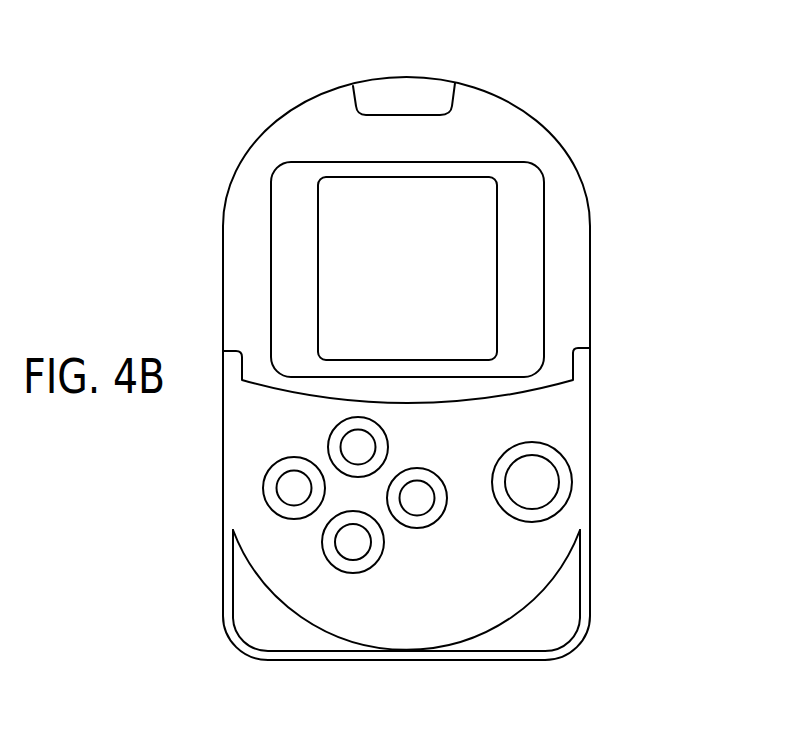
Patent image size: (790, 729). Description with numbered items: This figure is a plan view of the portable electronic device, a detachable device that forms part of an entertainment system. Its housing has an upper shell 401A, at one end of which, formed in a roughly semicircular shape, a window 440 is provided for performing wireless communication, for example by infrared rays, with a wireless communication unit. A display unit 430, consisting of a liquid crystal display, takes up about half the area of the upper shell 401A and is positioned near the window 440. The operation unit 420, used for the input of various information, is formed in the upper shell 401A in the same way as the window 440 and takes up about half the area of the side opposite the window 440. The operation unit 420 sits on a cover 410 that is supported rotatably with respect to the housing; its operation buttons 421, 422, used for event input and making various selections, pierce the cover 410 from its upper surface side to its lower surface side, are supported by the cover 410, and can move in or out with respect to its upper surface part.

The upper shell 401A is at (581, 259).
The cover 410 is at (582, 436).
The operation unit 420 is at (470, 613).
The operation button 421 is at (365, 445).
The operation button 422 is at (525, 495).
The display unit 430 is at (358, 190).
The window 440 is at (425, 77).